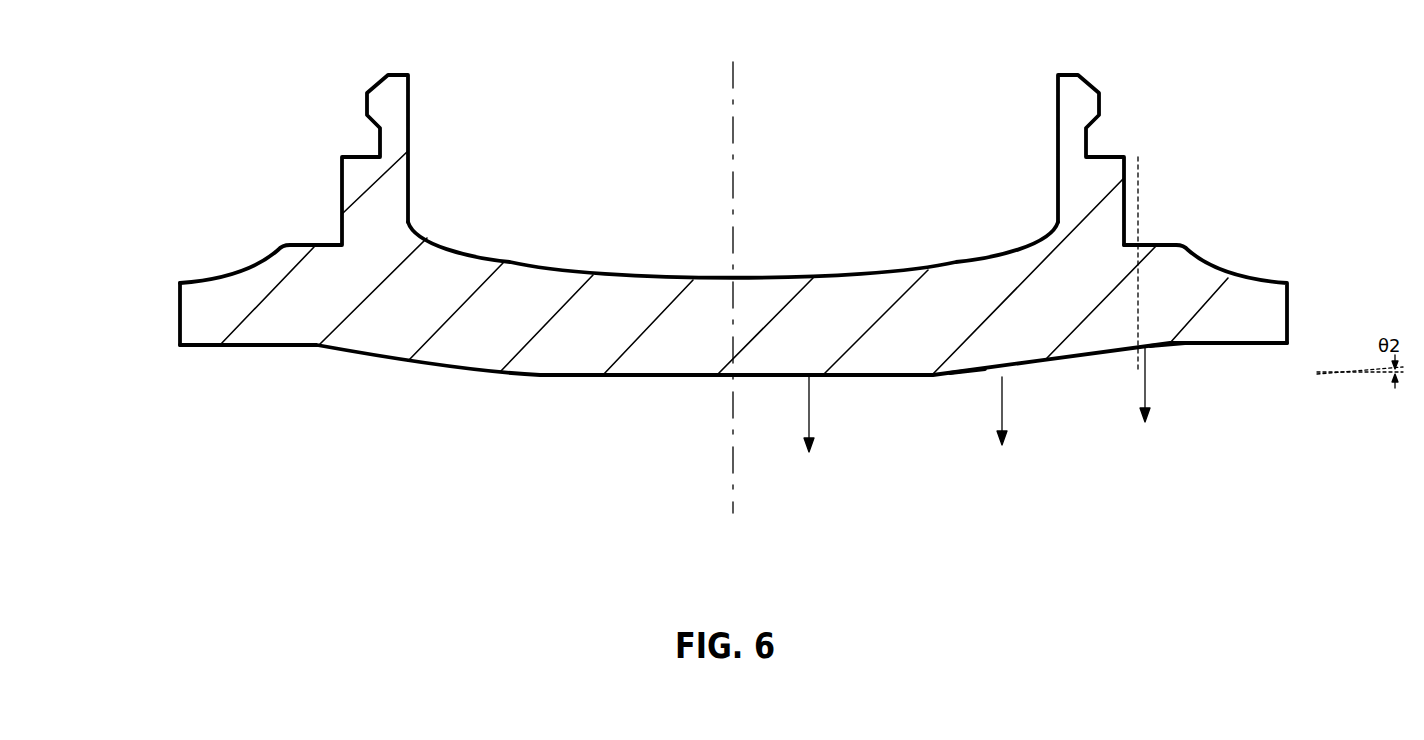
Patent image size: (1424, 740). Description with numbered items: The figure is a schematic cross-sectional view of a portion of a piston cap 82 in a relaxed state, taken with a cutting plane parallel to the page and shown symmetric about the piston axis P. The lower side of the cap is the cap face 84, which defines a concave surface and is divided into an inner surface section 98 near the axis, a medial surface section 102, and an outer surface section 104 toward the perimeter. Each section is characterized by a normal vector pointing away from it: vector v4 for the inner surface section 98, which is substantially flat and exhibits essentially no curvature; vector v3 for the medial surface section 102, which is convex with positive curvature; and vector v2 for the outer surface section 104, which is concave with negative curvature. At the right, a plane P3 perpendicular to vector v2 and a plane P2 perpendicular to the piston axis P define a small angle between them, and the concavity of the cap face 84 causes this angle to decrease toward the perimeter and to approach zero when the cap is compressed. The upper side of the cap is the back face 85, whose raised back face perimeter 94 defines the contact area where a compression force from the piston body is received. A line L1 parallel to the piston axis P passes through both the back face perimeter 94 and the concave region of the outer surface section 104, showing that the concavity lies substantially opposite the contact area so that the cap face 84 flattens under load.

The piston cap 82 is at (207, 297).
The cap face 84 is at (663, 377).
The back face 85 is at (885, 268).
The back face perimeter 94 is at (1150, 243).
The inner surface section 98 is at (767, 377).
The medial surface section 102 is at (967, 377).
The outer surface section 104 is at (1167, 346).
The piston axis P is at (736, 128).
The line L1 is at (1138, 173).
The vector v2 is at (1145, 373).
The vector v3 is at (1002, 400).
The vector v4 is at (810, 407).
The plane P2 is at (1387, 378).
The plane P3 is at (1372, 370).